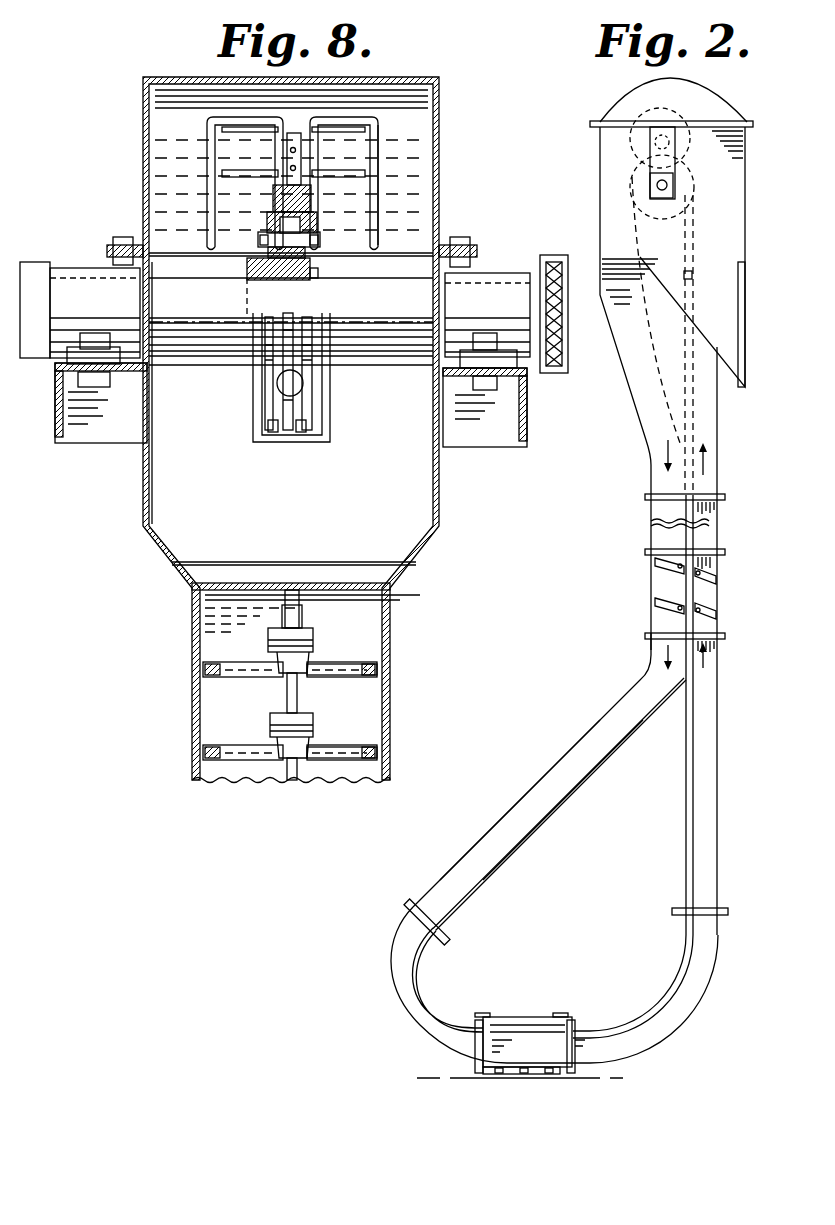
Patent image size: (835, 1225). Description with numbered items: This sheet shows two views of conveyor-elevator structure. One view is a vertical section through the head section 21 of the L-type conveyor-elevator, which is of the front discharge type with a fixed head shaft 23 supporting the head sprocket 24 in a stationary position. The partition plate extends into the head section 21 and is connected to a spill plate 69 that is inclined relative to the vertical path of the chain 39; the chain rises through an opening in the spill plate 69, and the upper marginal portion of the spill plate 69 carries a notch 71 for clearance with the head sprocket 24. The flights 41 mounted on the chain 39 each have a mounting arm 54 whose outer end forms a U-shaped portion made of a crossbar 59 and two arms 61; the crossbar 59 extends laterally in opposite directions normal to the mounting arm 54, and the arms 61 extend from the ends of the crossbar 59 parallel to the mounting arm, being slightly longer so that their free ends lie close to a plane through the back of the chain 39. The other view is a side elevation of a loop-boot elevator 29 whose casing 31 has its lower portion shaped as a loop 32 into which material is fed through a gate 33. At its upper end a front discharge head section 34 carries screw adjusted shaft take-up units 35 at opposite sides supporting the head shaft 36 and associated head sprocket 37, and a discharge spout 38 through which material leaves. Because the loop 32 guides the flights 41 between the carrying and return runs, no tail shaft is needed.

In FIG. 8, the head section 21 is at (437, 503).
In FIG. 8, the head shaft 23 is at (419, 319).
In FIG. 8, the head sprocket 24 is at (320, 425).
In FIG. 2, the loop-boot elevator 29 is at (624, 700).
In FIG. 2, the casing 31 is at (650, 536).
In FIG. 2, the loop 32 is at (486, 849).
In FIG. 2, the gate 33 is at (527, 1015).
In FIG. 2, the front discharge head section 34 is at (600, 187).
In FIG. 2, the screw adjusted shaft take-up units 35 is at (650, 143).
In FIG. 2, the head shaft 36 is at (665, 185).
In FIG. 2, the head sprocket 37 is at (690, 214).
In FIG. 2, the discharge spout 38 is at (746, 293).
In FIG. 8, the chain 39 is at (286, 693).
In FIG. 2, the chain 39 is at (672, 585).
In FIG. 8, the flights 41 is at (379, 168).
In FIG. 2, the flights 41 is at (713, 602).
In FIG. 8, the mounting arm 54 is at (286, 151).
In FIG. 8, the crossbar 59 is at (331, 170).
In FIG. 8, the arms 61 is at (208, 163).
In FIG. 8, the spill plate 69 is at (163, 497).
In FIG. 8, the notch 71 is at (254, 406).